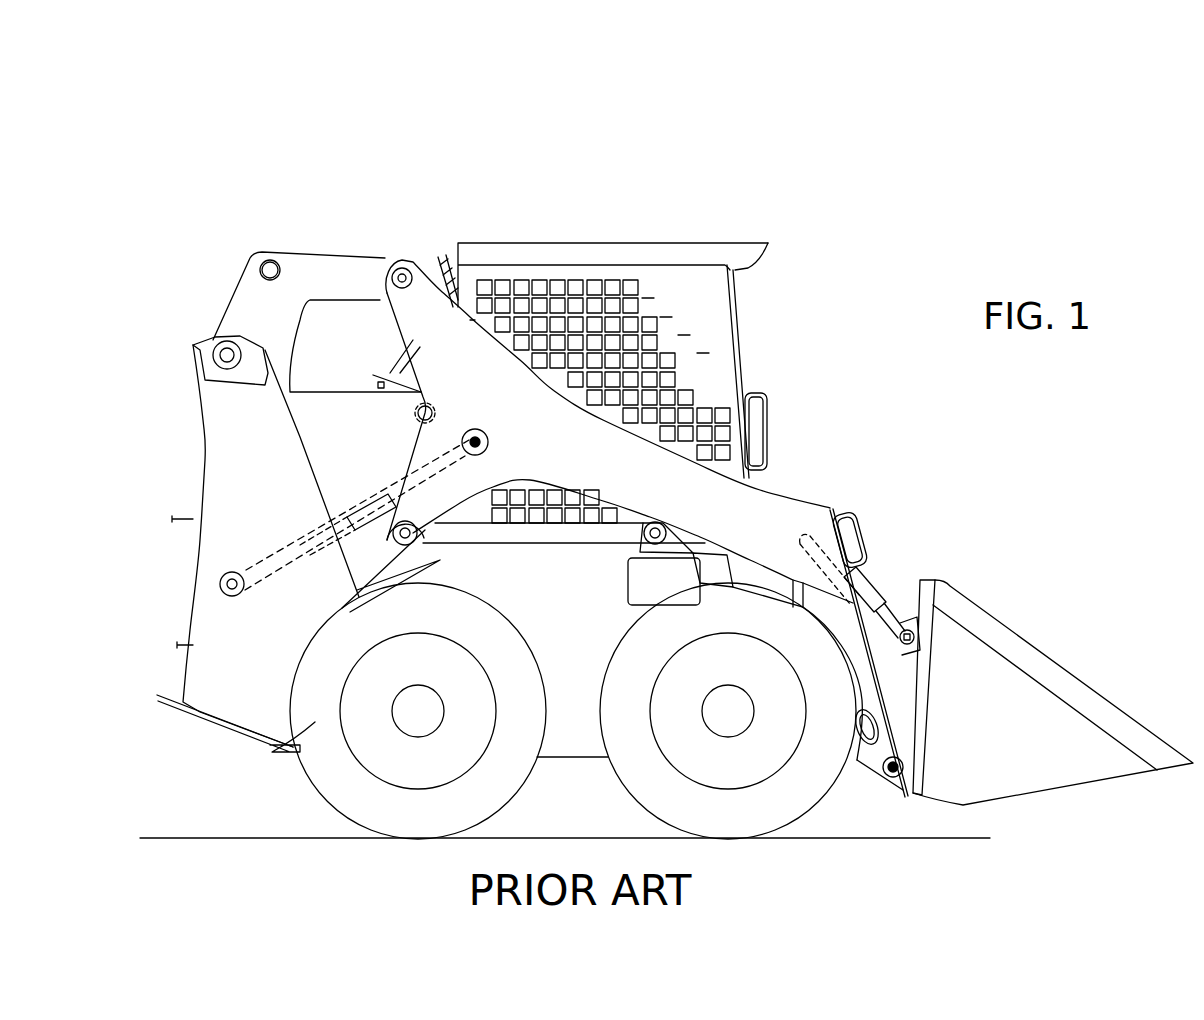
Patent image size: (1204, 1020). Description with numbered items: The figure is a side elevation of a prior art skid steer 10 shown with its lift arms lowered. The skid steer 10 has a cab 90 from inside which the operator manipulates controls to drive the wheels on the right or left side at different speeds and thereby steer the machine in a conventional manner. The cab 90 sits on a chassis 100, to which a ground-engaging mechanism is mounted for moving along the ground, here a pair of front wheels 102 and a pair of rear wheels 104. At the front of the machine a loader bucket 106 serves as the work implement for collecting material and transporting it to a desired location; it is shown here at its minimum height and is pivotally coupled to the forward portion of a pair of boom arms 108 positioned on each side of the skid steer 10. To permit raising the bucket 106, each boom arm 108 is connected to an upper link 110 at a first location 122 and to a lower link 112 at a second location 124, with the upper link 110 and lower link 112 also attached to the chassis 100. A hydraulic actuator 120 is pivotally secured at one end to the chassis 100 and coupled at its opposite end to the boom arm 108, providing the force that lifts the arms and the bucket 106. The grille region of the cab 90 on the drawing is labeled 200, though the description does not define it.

The skid steer 10 is at (777, 61).
The cab 90 is at (750, 219).
The chassis 100 is at (580, 717).
The front wheels 102 is at (797, 777).
The rear wheels 104 is at (360, 780).
The loader bucket 106 is at (1013, 688).
The boom arms 108 is at (780, 513).
The upper link 110 is at (414, 262).
The lower link 112 is at (427, 530).
The hydraulic actuator 120 is at (320, 530).
The first location 122 is at (384, 236).
The second location 124 is at (367, 547).
The grille 200 is at (750, 366).